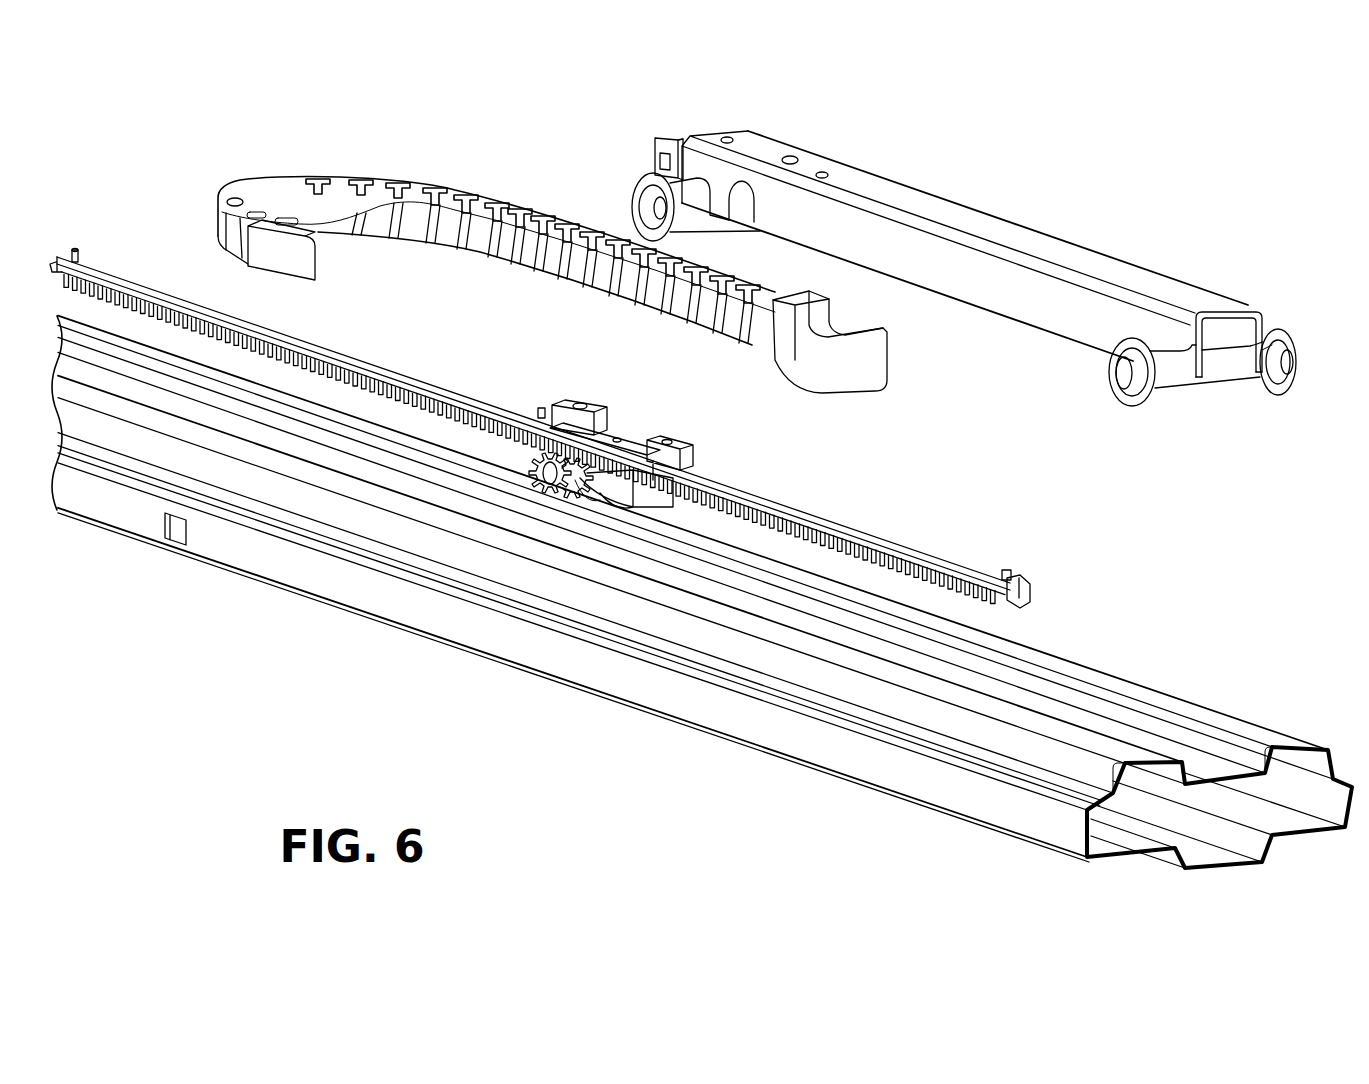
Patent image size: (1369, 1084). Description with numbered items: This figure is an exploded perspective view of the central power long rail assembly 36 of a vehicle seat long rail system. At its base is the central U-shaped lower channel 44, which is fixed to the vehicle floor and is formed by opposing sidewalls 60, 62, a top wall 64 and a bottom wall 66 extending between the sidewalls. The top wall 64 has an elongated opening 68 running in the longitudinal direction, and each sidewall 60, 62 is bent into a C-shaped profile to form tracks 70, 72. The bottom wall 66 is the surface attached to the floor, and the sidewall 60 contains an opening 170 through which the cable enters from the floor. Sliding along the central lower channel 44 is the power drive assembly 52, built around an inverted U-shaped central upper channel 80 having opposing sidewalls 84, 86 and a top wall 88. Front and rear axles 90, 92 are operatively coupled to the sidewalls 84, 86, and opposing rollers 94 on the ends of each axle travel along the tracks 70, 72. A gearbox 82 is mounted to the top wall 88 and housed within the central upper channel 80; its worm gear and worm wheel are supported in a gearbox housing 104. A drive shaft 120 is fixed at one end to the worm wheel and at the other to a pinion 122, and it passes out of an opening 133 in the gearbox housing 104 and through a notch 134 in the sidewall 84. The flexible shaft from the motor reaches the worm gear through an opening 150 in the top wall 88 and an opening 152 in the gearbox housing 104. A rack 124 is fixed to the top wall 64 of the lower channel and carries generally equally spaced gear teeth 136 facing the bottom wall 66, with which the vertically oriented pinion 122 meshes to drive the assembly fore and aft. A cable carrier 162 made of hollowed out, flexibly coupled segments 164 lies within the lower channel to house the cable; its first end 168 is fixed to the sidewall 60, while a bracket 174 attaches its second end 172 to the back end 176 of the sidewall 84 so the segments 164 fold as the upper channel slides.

The central power long rail assembly 36 is at (549, 276).
The central U-shaped lower channel 44 is at (702, 625).
The power drive assembly 52 is at (952, 263).
The sidewall 60 is at (1060, 828).
The sidewall 62 is at (1330, 812).
The top wall 64 is at (1127, 752).
The bottom wall 66 is at (1243, 878).
The elongated opening 68 is at (1205, 785).
The track 70 is at (1117, 840).
The track 72 is at (1285, 822).
The central upper channel 80 is at (965, 237).
The gearbox 82 is at (593, 468).
The sidewall 84 is at (1063, 335).
The sidewall 86 is at (1265, 318).
The top wall 88 is at (1200, 295).
The front axle 90 is at (1233, 378).
The rear axle 92 is at (657, 168).
The roller 94 is at (632, 185).
The gearbox housing 104 is at (656, 450).
The drive shaft 120 is at (592, 488).
The pinion 122 is at (536, 470).
The rack 124 is at (565, 448).
The opening 133 is at (680, 503).
The notch 134 is at (760, 204).
The gear teeth 136 is at (1000, 608).
The opening 150 is at (792, 155).
The opening 152 is at (615, 437).
The cable carrier 162 is at (552, 276).
The segment 164 is at (386, 218).
The first end 168 is at (283, 257).
The opening 170 is at (177, 528).
The second end 172 is at (830, 395).
The bracket 174 is at (655, 150).
The back end 176 is at (681, 137).